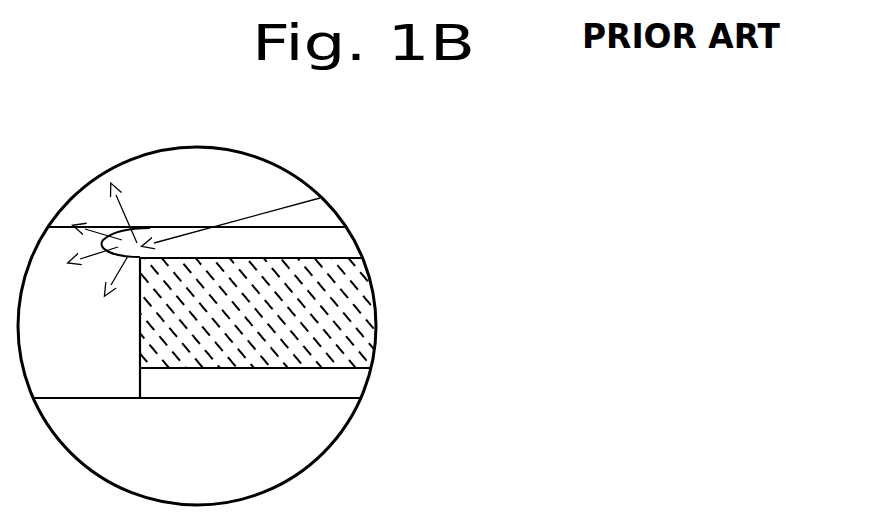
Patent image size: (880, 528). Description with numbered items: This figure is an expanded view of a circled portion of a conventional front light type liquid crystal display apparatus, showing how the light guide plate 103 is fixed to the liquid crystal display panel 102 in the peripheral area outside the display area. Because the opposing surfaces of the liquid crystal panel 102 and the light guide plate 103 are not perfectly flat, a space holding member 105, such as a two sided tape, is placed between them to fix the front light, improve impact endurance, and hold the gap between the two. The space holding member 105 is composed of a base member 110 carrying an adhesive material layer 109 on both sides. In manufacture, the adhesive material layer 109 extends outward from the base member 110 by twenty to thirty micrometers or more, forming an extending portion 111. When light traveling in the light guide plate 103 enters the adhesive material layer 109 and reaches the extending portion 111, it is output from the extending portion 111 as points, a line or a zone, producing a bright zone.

The extending portion 111 is at (137, 245).
The light guide plate 103 is at (289, 188).
The adhesive material layer 109 is at (347, 247).
The base member 110 is at (350, 300).
The space holding member 105 is at (476, 308).
The liquid crystal display panel 102 is at (315, 445).